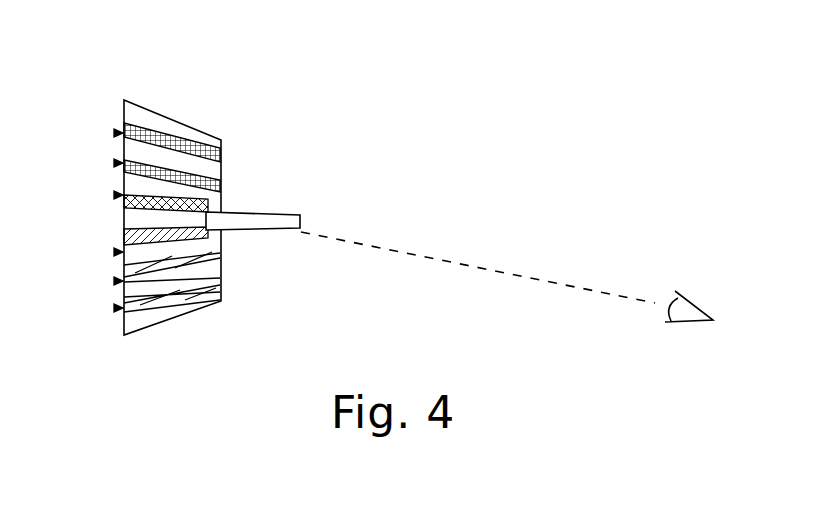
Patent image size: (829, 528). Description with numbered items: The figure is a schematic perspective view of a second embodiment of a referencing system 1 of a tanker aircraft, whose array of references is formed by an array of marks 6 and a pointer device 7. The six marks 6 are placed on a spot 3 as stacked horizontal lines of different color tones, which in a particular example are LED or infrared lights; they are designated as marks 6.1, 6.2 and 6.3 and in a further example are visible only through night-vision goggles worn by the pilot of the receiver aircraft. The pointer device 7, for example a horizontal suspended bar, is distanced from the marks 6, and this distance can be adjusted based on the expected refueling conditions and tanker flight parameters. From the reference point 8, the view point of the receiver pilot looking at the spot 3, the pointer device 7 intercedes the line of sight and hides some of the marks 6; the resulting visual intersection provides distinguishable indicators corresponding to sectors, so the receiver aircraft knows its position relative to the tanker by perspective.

The referencing system 1 is at (238, 68).
The spot 3 is at (153, 112).
The marks 6 is at (116, 195).
The mark 6.1 is at (221, 178).
The mark 6.2 is at (123, 241).
The mark 6.3 is at (221, 285).
The pointer device 7 is at (302, 214).
The reference point 8 is at (688, 302).